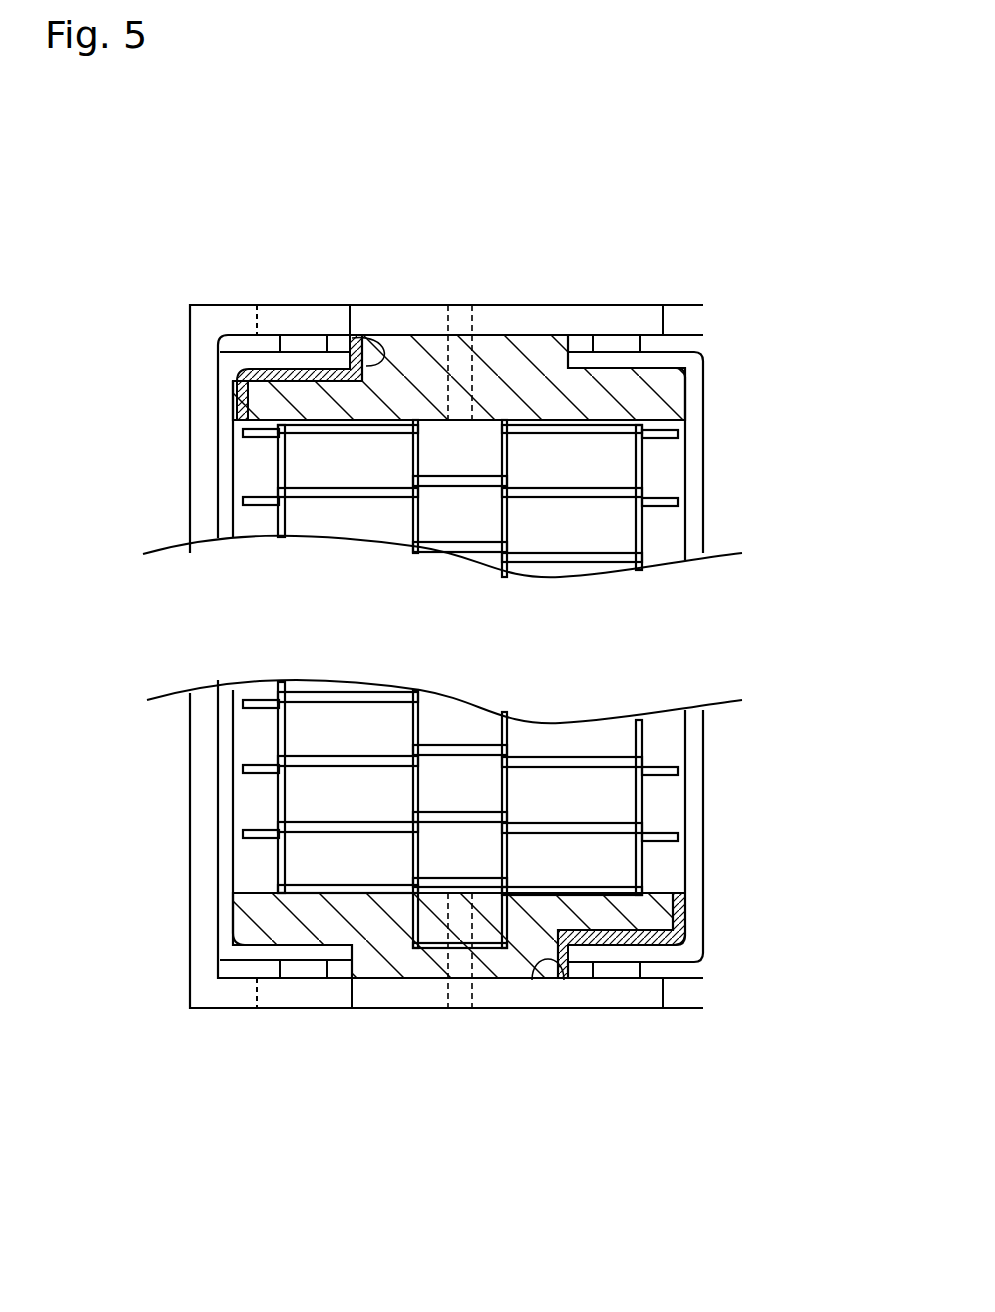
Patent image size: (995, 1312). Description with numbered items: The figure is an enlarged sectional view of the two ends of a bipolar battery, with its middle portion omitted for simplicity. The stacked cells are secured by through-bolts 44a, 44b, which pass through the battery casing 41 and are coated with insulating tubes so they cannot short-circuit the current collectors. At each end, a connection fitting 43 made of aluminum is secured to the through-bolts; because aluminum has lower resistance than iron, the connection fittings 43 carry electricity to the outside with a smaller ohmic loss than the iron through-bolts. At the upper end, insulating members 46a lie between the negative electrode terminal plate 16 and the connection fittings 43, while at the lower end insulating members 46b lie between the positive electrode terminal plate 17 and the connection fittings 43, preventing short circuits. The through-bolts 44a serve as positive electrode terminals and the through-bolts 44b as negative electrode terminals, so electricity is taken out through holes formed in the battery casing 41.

The negative electrode terminal plate 16 is at (509, 368).
The positive electrode terminal plate 17 is at (509, 968).
The battery casing 41 is at (541, 322).
The connection fitting 43 is at (243, 358).
The through-bolt 44a is at (305, 345).
The through-bolt 44b is at (616, 345).
The insulating member 46a is at (385, 337).
The insulating member 46b is at (507, 900).